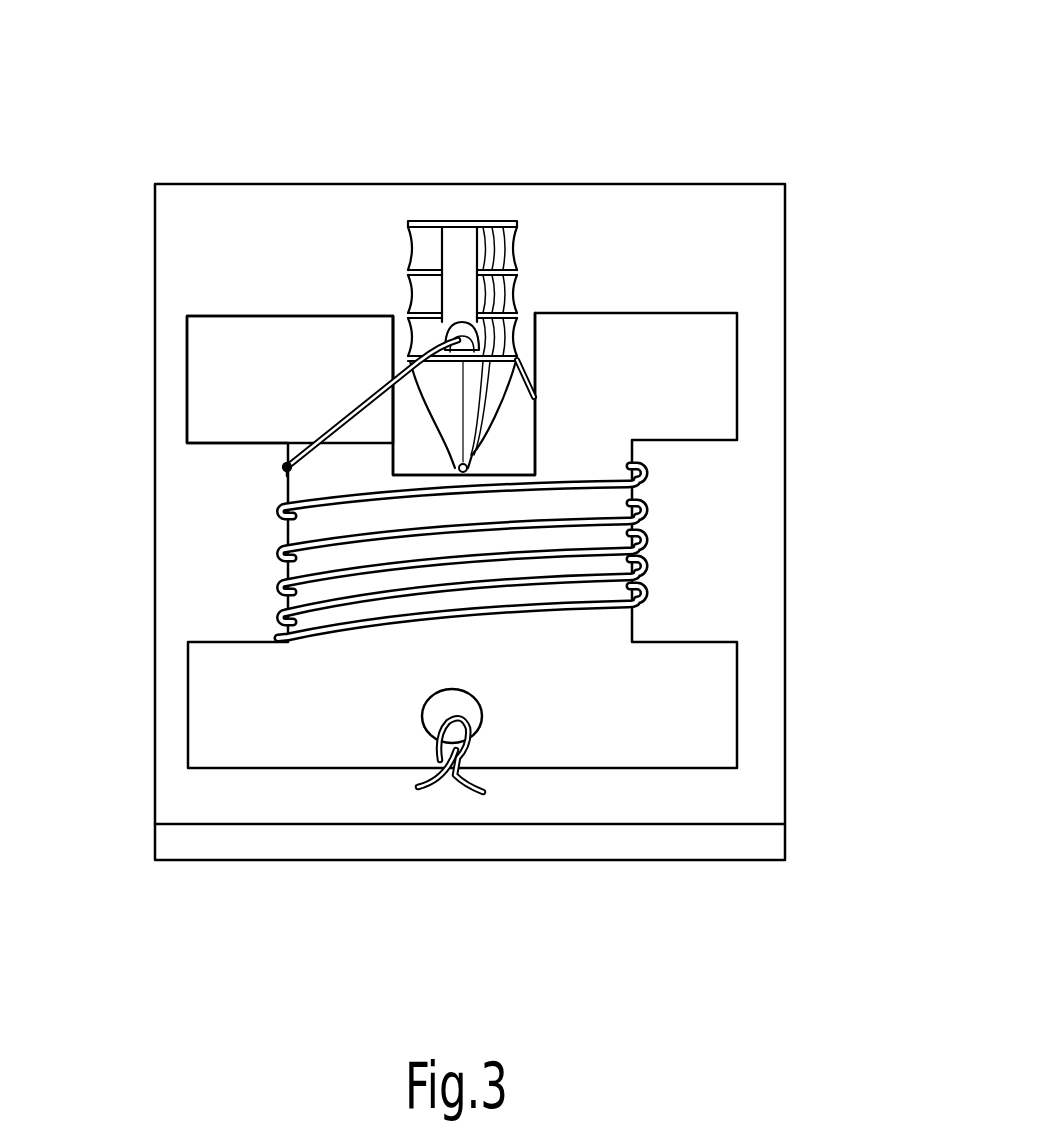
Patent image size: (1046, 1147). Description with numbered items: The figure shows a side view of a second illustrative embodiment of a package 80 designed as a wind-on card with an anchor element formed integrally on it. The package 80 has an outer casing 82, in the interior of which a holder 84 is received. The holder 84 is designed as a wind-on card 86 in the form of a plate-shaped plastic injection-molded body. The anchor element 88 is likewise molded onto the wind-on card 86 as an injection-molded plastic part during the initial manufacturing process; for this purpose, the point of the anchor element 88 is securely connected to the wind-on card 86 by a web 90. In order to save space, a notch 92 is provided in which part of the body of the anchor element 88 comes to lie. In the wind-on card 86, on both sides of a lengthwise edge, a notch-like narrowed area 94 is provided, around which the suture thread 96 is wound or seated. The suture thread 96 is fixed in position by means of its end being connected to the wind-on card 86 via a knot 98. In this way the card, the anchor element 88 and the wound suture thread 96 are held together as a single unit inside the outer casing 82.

The package 80 is at (716, 126).
The outer casing 82 is at (786, 212).
The holder 84 is at (240, 258).
The wind-on card 86 is at (205, 382).
The anchor element 88 is at (420, 250).
The web 90 is at (473, 467).
The notch 92 is at (537, 347).
The notch-like narrowed area 94 is at (287, 487).
The suture thread 96 is at (637, 547).
The knot 98 is at (458, 788).